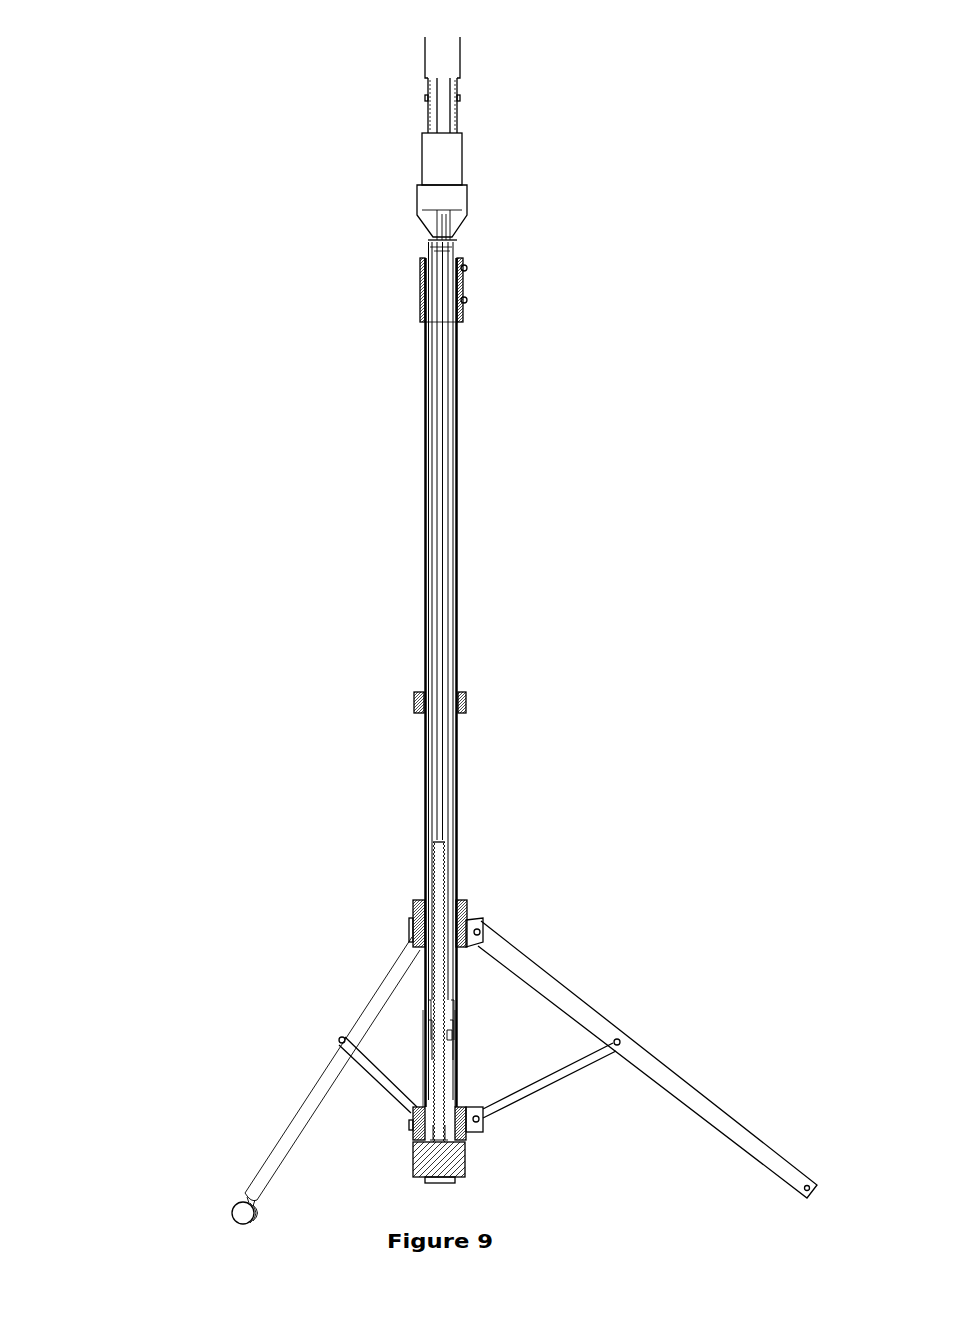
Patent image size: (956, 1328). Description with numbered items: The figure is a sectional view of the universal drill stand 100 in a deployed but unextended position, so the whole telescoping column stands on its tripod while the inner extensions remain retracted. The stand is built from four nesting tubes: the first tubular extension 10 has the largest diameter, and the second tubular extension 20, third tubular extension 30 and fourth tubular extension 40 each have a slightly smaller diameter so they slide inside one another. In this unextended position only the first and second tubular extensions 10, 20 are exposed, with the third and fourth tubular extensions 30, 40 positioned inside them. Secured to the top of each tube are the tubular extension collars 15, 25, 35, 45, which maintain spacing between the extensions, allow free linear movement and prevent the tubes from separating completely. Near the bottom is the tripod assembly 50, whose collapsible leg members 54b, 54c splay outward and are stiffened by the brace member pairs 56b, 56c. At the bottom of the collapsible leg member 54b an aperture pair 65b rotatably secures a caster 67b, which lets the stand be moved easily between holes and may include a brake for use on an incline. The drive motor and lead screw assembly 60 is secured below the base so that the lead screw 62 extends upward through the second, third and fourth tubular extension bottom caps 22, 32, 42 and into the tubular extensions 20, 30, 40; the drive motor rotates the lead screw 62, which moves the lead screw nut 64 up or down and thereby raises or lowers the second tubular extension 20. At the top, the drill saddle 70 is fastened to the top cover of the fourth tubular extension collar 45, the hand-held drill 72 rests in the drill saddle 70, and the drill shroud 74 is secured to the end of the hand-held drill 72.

The universal drill stand 100 is at (327, 62).
The drill shroud 74 is at (458, 50).
The hand-held drill 72 is at (458, 147).
The drill saddle 70 is at (467, 193).
The fourth tubular extension collar 45 is at (430, 241).
The third tubular extension collar 35 is at (423, 273).
The second tubular extension collar 25 is at (420, 307).
The fourth tubular extension 40 is at (432, 494).
The third tubular extension 30 is at (428, 537).
The second tubular extension 20 is at (425, 584).
The first tubular extension collar 15 is at (418, 690).
The first tubular extension 10 is at (420, 813).
The tripod assembly 50 is at (493, 905).
The collapsible leg member 54c is at (550, 977).
The collapsible leg member 54b is at (337, 1060).
The brace member pair 56b is at (348, 1075).
The brace member pair 56c is at (577, 1063).
The fourth tubular extension bottom cap 42 is at (435, 973).
The third tubular extension bottom cap 32 is at (433, 1012).
The second tubular extension bottom cap 22 is at (450, 1040).
The lead screw 62 is at (440, 1083).
The lead screw nut 64 is at (438, 1128).
The drive motor and lead screw assembly 60 is at (465, 1162).
The aperture pair 65b is at (247, 1187).
The caster 67b is at (240, 1210).